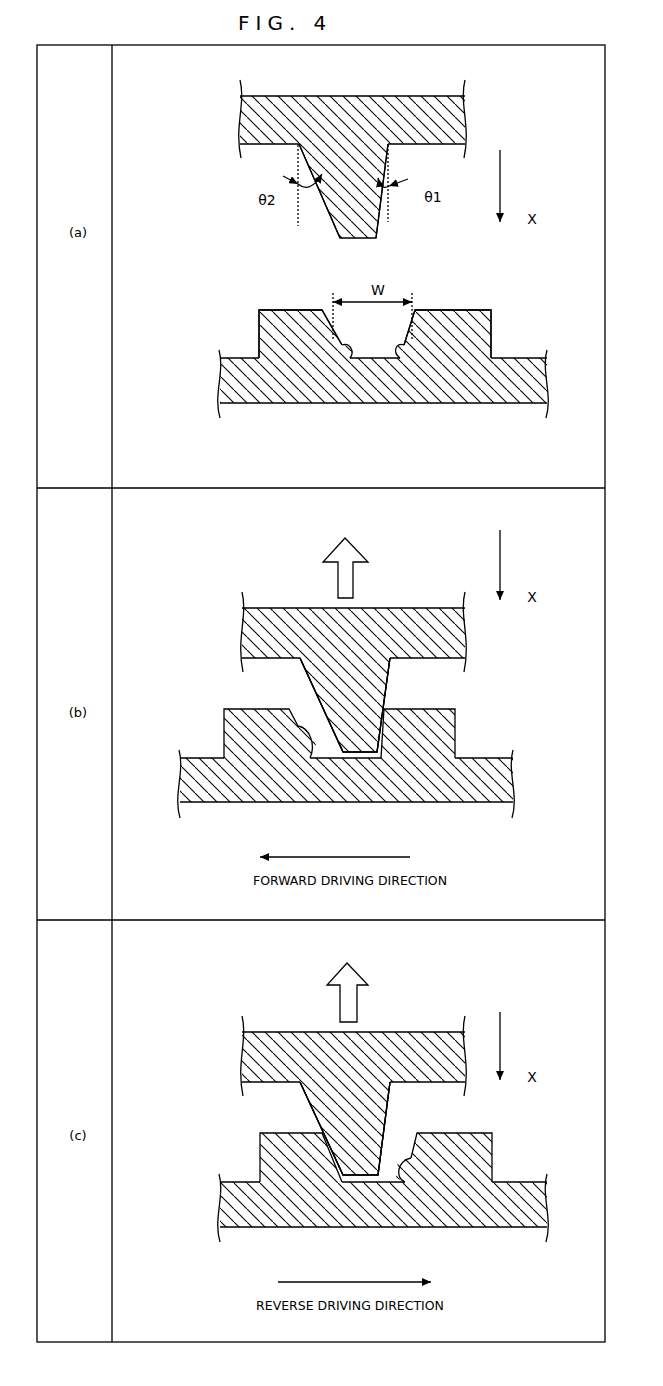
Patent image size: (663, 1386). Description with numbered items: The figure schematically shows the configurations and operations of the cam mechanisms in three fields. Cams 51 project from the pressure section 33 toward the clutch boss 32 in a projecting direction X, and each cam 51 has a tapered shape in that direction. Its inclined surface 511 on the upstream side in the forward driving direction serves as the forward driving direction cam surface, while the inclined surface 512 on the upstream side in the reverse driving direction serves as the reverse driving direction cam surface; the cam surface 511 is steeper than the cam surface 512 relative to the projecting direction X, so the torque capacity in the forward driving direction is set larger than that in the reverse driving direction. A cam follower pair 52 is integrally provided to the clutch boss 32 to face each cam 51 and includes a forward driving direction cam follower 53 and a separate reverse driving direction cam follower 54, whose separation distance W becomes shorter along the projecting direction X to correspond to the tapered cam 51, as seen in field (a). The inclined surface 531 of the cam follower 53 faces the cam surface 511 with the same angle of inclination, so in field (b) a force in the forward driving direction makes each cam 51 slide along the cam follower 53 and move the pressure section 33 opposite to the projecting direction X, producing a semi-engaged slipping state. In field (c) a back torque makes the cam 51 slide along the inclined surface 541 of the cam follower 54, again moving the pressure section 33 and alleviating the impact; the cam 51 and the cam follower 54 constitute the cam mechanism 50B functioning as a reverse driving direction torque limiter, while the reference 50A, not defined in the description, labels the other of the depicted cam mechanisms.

The pressure section 33 is at (368, 108).
The cam 51 is at (362, 236).
The forward driving direction cam surface 511 is at (379, 224).
The reverse driving direction cam surface 512 is at (330, 207).
The cam follower pair 52 is at (481, 290).
The forward driving direction cam follower 53 is at (480, 332).
The inclined surface of forward driving direction cam follower 531 is at (402, 352).
The reverse driving direction cam follower 54 is at (270, 332).
The inclined surface of reverse driving direction cam follower 541 is at (346, 352).
The clutch boss 32 is at (498, 404).
The engaged state during reverse driving 50A is at (221, 1100).
The cam mechanism 50B is at (438, 673).